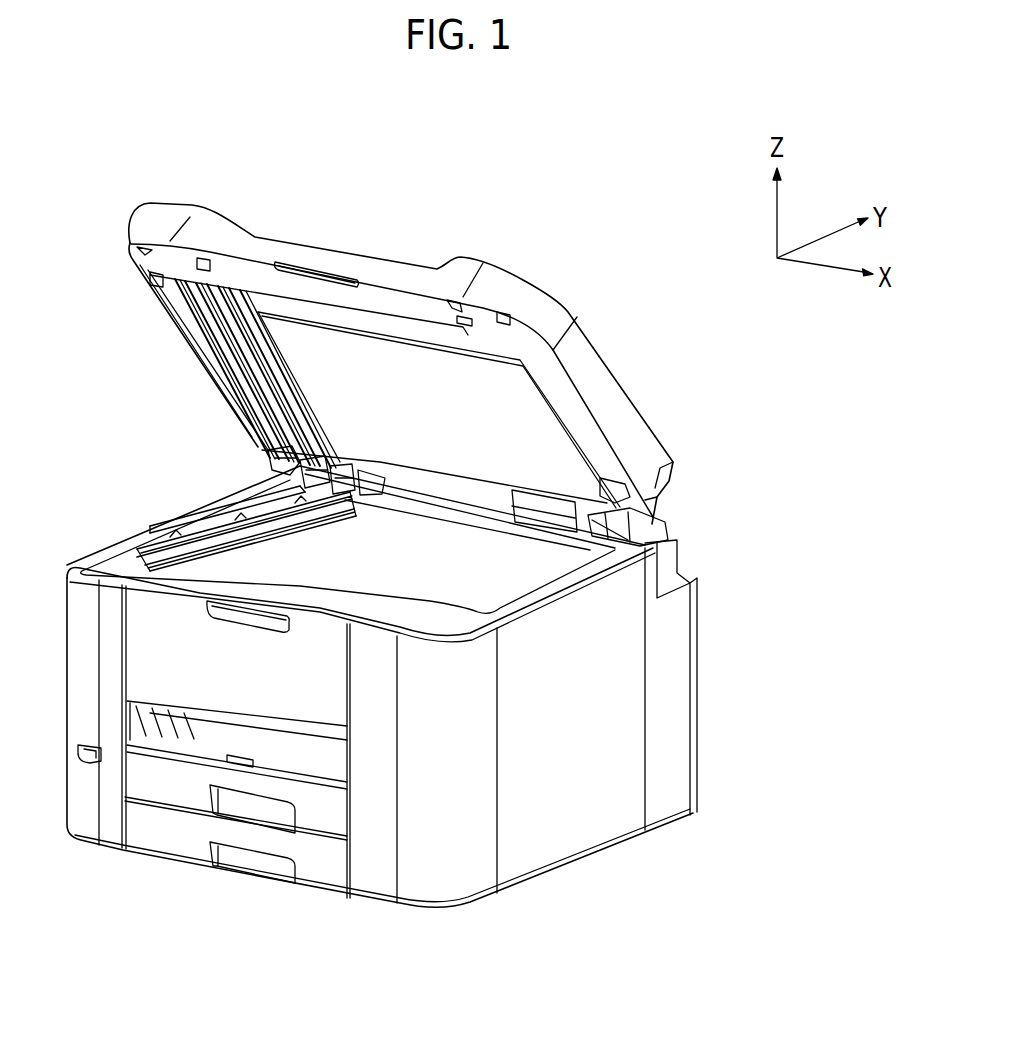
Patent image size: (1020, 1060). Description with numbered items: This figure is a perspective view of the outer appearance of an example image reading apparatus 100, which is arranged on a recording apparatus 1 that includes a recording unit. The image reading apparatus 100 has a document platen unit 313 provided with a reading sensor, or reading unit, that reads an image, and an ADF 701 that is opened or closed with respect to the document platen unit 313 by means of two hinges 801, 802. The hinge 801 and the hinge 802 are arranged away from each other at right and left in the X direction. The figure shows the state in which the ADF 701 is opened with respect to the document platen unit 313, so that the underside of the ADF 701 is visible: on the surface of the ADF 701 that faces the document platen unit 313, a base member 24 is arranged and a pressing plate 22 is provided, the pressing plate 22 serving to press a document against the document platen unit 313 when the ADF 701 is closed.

The image reading apparatus 100 is at (612, 333).
The recording apparatus 1 is at (620, 798).
The ADF 701 is at (218, 227).
The pressing plate 22 is at (513, 430).
The base member 24 is at (628, 498).
The document platen unit 313 is at (235, 523).
The hinge 801 is at (296, 473).
The hinge 802 is at (643, 530).